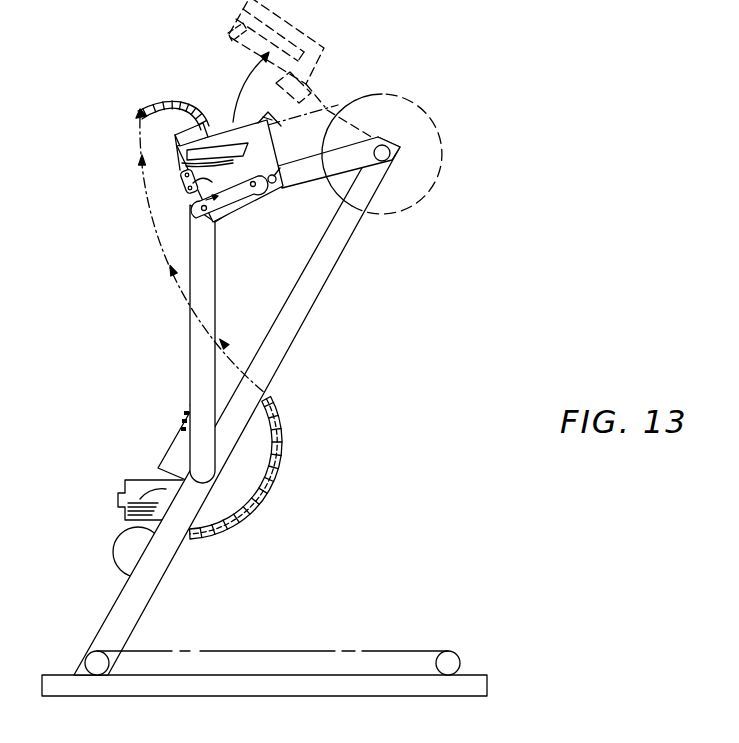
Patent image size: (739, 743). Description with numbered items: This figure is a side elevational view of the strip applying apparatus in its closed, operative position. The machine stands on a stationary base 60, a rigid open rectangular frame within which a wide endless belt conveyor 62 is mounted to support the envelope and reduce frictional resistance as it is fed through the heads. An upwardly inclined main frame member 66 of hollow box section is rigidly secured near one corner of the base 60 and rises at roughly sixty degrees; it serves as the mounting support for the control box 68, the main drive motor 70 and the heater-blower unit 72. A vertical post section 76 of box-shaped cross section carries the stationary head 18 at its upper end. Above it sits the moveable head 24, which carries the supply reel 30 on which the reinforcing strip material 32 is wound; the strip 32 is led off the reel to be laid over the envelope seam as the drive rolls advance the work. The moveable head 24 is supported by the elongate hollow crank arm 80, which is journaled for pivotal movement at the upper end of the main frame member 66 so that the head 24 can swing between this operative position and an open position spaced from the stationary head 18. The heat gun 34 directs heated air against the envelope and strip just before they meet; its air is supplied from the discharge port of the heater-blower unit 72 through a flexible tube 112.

The stationary head 18 is at (192, 202).
The moveable head 24 is at (230, 147).
The supply reel 30 is at (415, 203).
The strip material 32 is at (326, 110).
The heat gun 34 is at (192, 114).
The stationary base 60 is at (370, 683).
The endless belt conveyor 62 is at (292, 652).
The main frame member 66 is at (297, 323).
The control box 68 is at (170, 448).
The main drive motor 70 is at (125, 480).
The heater-blower unit 72 is at (120, 553).
The vertical post section 76 is at (195, 318).
The crank arm 80 is at (302, 183).
The flexible tube 112 is at (280, 472).